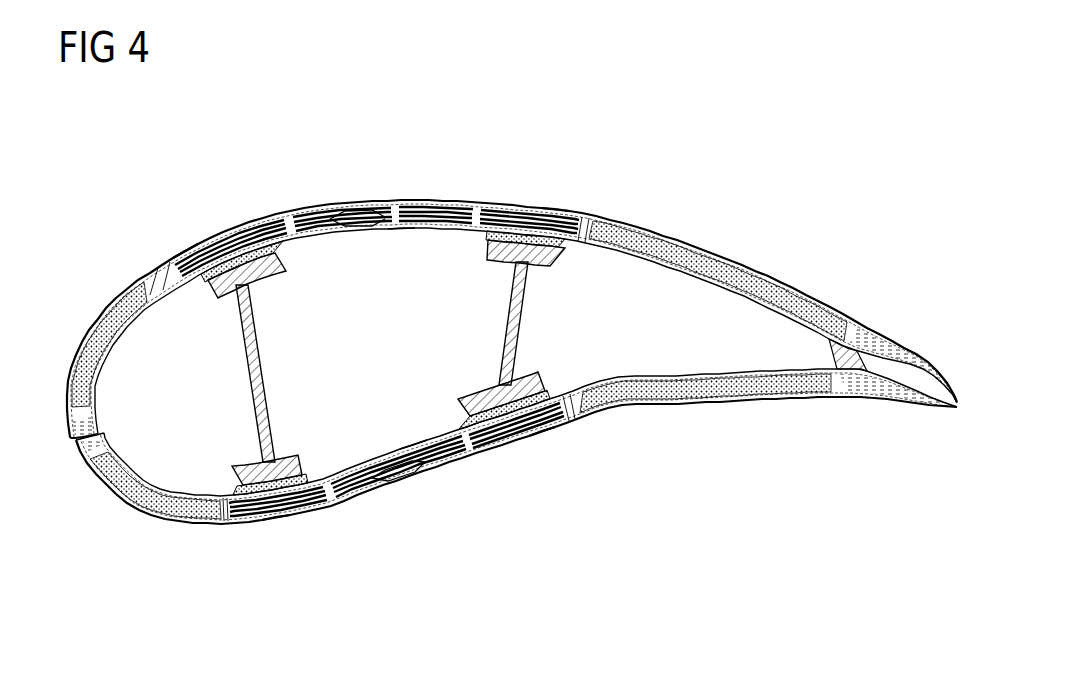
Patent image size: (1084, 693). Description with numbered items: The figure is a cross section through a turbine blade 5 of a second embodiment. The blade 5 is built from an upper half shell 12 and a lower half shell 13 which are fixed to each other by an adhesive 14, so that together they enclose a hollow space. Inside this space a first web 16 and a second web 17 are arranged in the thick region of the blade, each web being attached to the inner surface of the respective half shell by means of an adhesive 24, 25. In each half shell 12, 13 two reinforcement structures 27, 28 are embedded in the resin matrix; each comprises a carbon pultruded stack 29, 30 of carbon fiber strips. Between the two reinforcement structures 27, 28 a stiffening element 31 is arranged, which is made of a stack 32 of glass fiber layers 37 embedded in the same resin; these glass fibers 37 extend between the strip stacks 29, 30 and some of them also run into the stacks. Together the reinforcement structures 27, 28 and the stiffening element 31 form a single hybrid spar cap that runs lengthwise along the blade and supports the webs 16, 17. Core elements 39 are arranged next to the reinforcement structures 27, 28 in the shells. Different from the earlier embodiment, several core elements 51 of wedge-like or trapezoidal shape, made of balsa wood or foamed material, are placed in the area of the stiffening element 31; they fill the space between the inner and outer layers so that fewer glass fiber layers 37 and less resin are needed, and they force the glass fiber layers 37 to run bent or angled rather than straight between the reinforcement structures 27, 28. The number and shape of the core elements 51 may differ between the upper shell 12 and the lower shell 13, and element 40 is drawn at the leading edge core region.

The turbine blade 5 is at (512, 291).
The upper half shell 12 is at (828, 272).
The lower half shell 13 is at (832, 432).
The adhesive 14 is at (860, 353).
The first web 16 is at (238, 394).
The second web 17 is at (492, 340).
The adhesive 24 is at (196, 296).
The adhesive 25 is at (573, 262).
The reinforcement structure 27 is at (185, 238).
The reinforcement structure 28 is at (557, 192).
The carbon pultruded stack 29 is at (162, 263).
The carbon pultruded stack 30 is at (592, 217).
The stiffening element 31 is at (340, 196).
The stack of glass fiber layers 32 is at (398, 242).
The glass fiber layers 37 is at (350, 228).
The core elements 39 is at (705, 262).
The leading edge core 40 is at (112, 313).
The core elements 51 is at (288, 230).